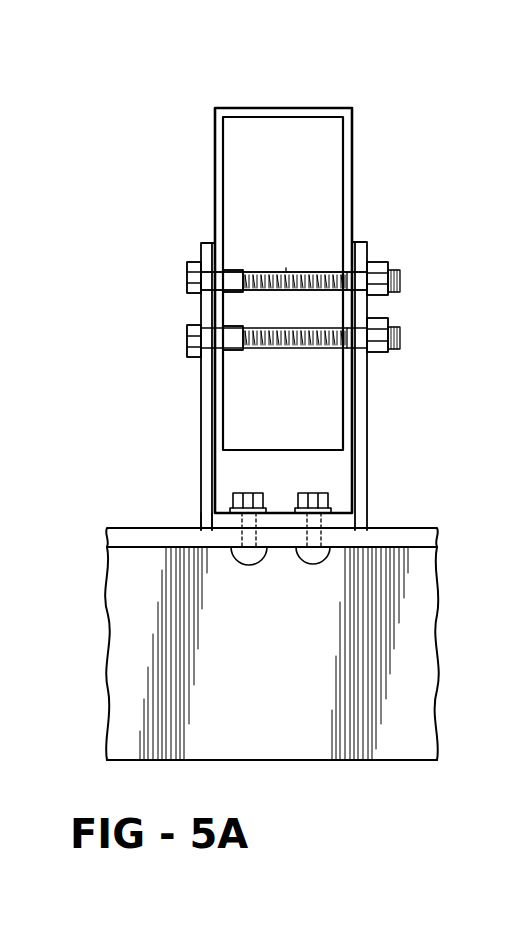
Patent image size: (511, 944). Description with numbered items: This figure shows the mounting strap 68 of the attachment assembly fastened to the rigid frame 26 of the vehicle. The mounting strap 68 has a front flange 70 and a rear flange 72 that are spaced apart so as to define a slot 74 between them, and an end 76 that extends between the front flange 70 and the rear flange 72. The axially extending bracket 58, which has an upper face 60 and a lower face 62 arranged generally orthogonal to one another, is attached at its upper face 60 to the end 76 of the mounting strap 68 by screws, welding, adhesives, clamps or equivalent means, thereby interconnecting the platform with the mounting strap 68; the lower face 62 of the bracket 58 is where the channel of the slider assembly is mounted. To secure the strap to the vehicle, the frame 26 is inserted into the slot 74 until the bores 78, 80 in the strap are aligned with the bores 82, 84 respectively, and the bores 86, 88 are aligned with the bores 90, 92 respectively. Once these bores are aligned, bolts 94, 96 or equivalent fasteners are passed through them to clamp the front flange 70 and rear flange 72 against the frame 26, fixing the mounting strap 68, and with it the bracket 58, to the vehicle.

The frame 26 is at (288, 128).
The bracket 58 is at (350, 760).
The upper face 60 is at (132, 540).
The lower face 62 is at (430, 690).
The mounting strap 68 is at (207, 547).
The front flange 70 is at (203, 471).
The rear flange 72 is at (362, 508).
The slot 74 is at (298, 246).
The end 76 is at (280, 520).
The bore 78 is at (208, 356).
The bore 80 is at (362, 368).
The bore 82 is at (245, 350).
The bore 84 is at (233, 281).
The bore 86 is at (208, 297).
The bore 88 is at (366, 262).
The bore 90 is at (219, 245).
The bore 92 is at (316, 268).
The bolt 94 is at (286, 268).
The bolt 96 is at (288, 350).